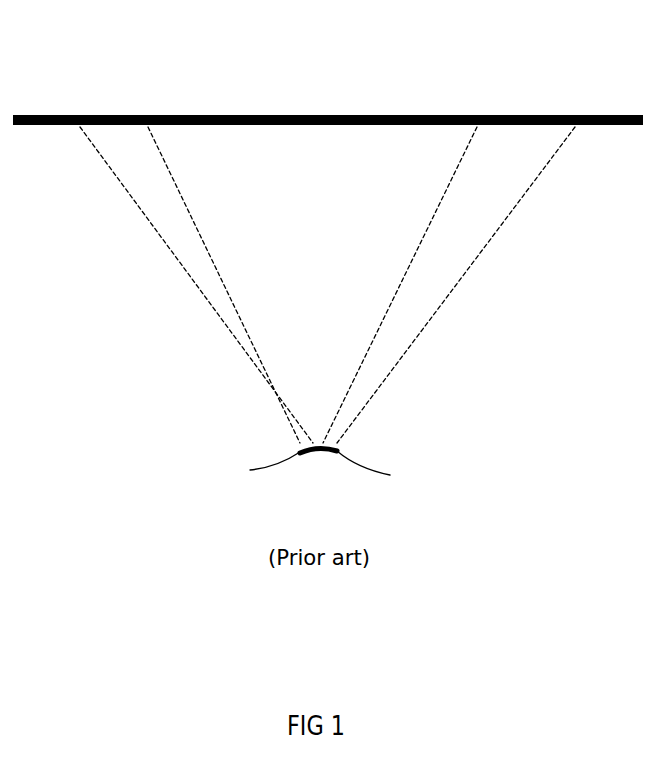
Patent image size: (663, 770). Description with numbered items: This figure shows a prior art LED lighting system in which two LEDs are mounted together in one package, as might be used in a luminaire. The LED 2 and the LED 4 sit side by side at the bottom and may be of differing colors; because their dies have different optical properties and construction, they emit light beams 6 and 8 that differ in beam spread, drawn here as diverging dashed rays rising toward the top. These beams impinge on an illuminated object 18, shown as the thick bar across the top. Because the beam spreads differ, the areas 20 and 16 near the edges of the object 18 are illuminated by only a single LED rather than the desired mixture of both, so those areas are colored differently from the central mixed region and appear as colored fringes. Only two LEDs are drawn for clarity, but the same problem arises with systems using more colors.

The LED 2 is at (263, 466).
The LED 4 is at (373, 467).
The light beam 6 is at (205, 245).
The light beam 8 is at (130, 195).
The area 16 is at (528, 115).
The illuminated object 18 is at (303, 115).
The area 20 is at (105, 115).